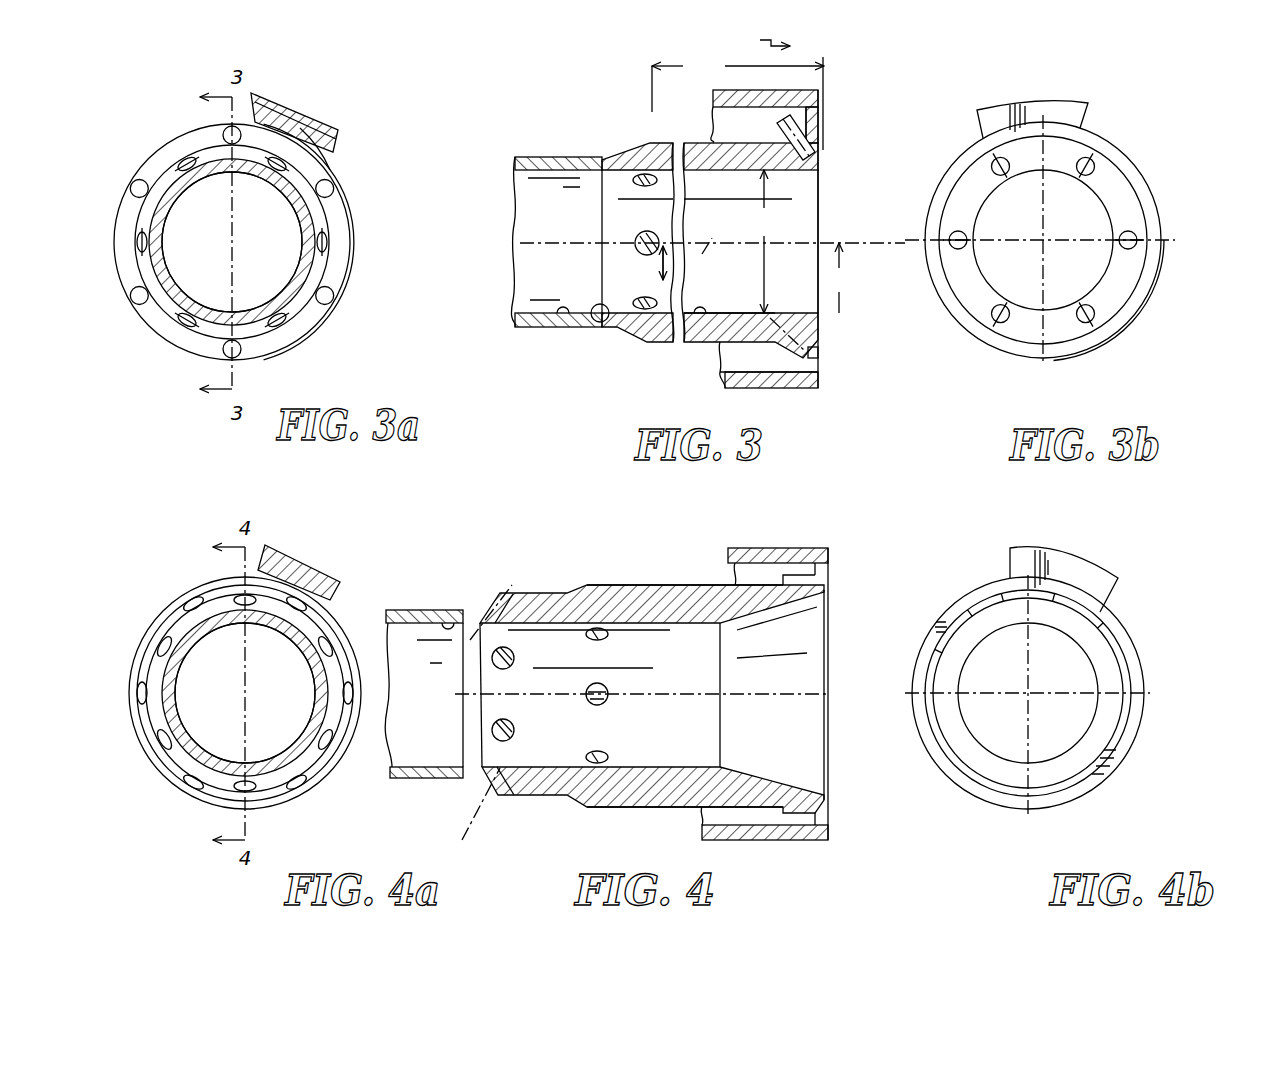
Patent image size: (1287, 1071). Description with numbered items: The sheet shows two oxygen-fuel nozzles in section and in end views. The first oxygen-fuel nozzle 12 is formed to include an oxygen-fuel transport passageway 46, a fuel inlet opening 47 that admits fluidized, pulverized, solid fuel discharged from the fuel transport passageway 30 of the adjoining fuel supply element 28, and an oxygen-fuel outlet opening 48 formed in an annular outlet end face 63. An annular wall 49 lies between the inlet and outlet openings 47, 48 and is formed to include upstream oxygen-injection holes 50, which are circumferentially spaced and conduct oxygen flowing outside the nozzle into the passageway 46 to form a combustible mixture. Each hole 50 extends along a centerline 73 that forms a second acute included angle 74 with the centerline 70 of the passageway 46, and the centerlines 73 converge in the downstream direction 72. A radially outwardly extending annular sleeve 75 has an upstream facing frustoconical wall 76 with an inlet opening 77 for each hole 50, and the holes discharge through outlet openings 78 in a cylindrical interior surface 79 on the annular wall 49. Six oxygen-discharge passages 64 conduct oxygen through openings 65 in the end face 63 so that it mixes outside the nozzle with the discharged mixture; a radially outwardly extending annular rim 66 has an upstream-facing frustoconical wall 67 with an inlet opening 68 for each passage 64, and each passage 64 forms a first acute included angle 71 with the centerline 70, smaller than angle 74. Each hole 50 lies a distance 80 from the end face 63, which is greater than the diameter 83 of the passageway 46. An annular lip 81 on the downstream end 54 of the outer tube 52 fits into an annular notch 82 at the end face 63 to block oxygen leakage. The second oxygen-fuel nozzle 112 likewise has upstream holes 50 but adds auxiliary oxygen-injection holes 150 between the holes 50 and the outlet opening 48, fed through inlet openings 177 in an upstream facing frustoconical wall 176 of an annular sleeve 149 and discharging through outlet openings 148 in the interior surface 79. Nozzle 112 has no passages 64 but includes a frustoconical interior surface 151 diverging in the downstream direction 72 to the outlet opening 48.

In FIG. 3, the oxygen-fuel nozzle 12 is at (632, 142).
In FIG. 3, the pipe 28 is at (532, 155).
In FIG. 4, the pipe 28 is at (418, 609).
In FIG. 3, the fuel transport passageway 30 is at (563, 320).
In FIG. 4, the fuel transport passageway 30 is at (448, 617).
In FIG. 3A, the oxygen-fuel transport passageway 46 is at (292, 172).
In FIG. 3, the oxygen-fuel transport passageway 46 is at (616, 227).
In FIG. 4, the oxygen-fuel transport passageway 46 is at (480, 721).
In FIG. 3, the fuel inlet opening 47 is at (602, 323).
In FIG. 3, the oxygen-fuel outlet opening 48 is at (814, 307).
In FIG. 3B, the oxygen-fuel outlet opening 48 is at (990, 197).
In FIG. 4, the oxygen-fuel outlet opening 48 is at (822, 612).
In FIG. 4B, the oxygen-fuel outlet opening 48 is at (1098, 633).
In FIG. 3A, the annular wall 49 is at (305, 282).
In FIG. 3, the annular wall 49 is at (705, 152).
In FIG. 4, the annular wall 49 is at (535, 590).
In FIG. 3A, the upstream oxygen-injection holes 50 is at (183, 160).
In FIG. 3, the upstream oxygen-injection holes 50 is at (632, 184).
In FIG. 4, the upstream oxygen-injection holes 50 is at (494, 589).
In FIG. 3A, the outer tube 52 is at (297, 106).
In FIG. 3, the outer tube 52 is at (733, 392).
In FIG. 4A, the outer tube 52 is at (338, 564).
In FIG. 4, the outer tube 52 is at (752, 842).
In FIG. 3A, the downstream end 54 is at (322, 120).
In FIG. 3, the downstream end 54 is at (797, 380).
In FIG. 4, the downstream end 54 is at (805, 839).
In FIG. 3, the annular outlet end face 63 is at (826, 152).
In FIG. 3B, the annular outlet end face 63 is at (1132, 206).
In FIG. 4B, the annular outlet end face 63 is at (1125, 646).
In FIG. 3A, the oxygen-discharge passages 64 is at (152, 163).
In FIG. 3, the oxygen-discharge passages 64 is at (826, 160).
In FIG. 3B, the oxygen-discharge passages 64 is at (1103, 174).
In FIG. 3, the openings 65 is at (826, 172).
In FIG. 3B, the openings 65 is at (1137, 244).
In FIG. 3, the annular rim 66 is at (812, 126).
In FIG. 3A, the upstream-facing frustoconical wall 67 is at (328, 336).
In FIG. 3, the upstream-facing frustoconical wall 67 is at (790, 350).
In FIG. 3A, the inlet opening 68 is at (334, 290).
In FIG. 3, the inlet opening 68 is at (780, 124).
In FIG. 3A, the centerline 70 is at (341, 305).
In FIG. 3, the centerline 70 is at (804, 243).
In FIG. 3B, the centerline 70 is at (1090, 165).
In FIG. 4, the centerline 70 is at (687, 691).
In FIG. 3, the first acute included angle 71 is at (839, 278).
In FIG. 3, the downstream direction 72 is at (761, 38).
In FIG. 3, the centerline 73 is at (702, 254).
In FIG. 4, the centerline 73 is at (456, 830).
In FIG. 3, the second acute included angle 74 is at (632, 303).
In FIG. 3, the annular sleeve 75 is at (690, 350).
In FIG. 3A, the upstream facing frustoconical wall 76 is at (133, 200).
In FIG. 3, the upstream facing frustoconical wall 76 is at (640, 344).
In FIG. 4A, the upstream facing frustoconical wall 76 is at (150, 727).
In FIG. 4, the upstream facing frustoconical wall 76 is at (478, 791).
In FIG. 3A, the inlet opening 77 is at (137, 252).
In FIG. 4A, the inlet opening 77 is at (161, 760).
In FIG. 3, the outlet openings 78 is at (647, 231).
In FIG. 4A, the cylindrical interior surface 79 is at (200, 762).
In FIG. 4, the cylindrical interior surface 79 is at (670, 767).
In FIG. 3, the distance 80 is at (738, 83).
In FIG. 3, the annular lip 81 is at (823, 362).
In FIG. 3B, the annular lip 81 is at (1056, 106).
In FIG. 4, the annular lip 81 is at (825, 808).
In FIG. 4B, the annular lip 81 is at (1086, 565).
In FIG. 3, the annular notch 82 is at (819, 352).
In FIG. 3, the diameter 83 is at (763, 241).
In FIG. 4, the oxygen-fuel nozzle 112 is at (582, 569).
In FIG. 4, the outlet openings 148 is at (605, 701).
In FIG. 4, the annular sleeve 149 is at (630, 590).
In FIG. 4, the auxiliary oxygen-injection holes 150 is at (605, 688).
In FIG. 4, the frustoconical interior surface 151 is at (772, 612).
In FIG. 4B, the frustoconical interior surface 151 is at (1086, 752).
In FIG. 4A, the upstream facing frustoconical wall 176 is at (160, 625).
In FIG. 4, the upstream facing frustoconical wall 176 is at (576, 800).
In FIG. 4A, the inlet opening 177 is at (194, 602).